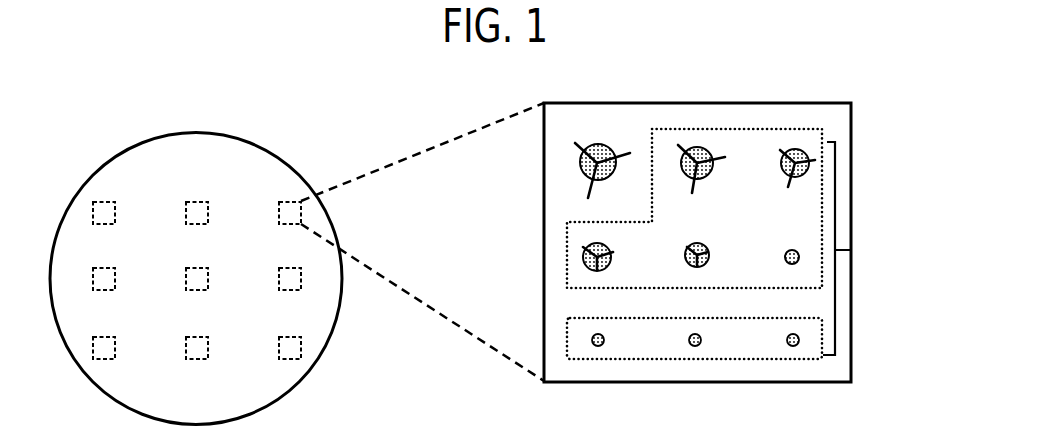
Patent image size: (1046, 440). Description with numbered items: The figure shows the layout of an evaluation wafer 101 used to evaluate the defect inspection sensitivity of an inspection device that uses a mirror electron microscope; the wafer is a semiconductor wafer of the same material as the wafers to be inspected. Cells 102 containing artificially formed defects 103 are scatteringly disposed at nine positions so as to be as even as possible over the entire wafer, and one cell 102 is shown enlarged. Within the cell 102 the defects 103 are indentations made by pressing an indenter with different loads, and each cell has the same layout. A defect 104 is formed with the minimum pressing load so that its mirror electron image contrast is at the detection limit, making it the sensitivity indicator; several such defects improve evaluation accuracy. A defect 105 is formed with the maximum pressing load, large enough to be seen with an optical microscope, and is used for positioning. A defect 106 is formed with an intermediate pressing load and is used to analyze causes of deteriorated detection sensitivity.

The evaluation wafer 101 is at (315, 336).
The cell 102 is at (292, 203).
The defect 103 is at (852, 252).
The defect 104 is at (657, 360).
The defect 105 is at (598, 143).
The defect 106 is at (738, 128).